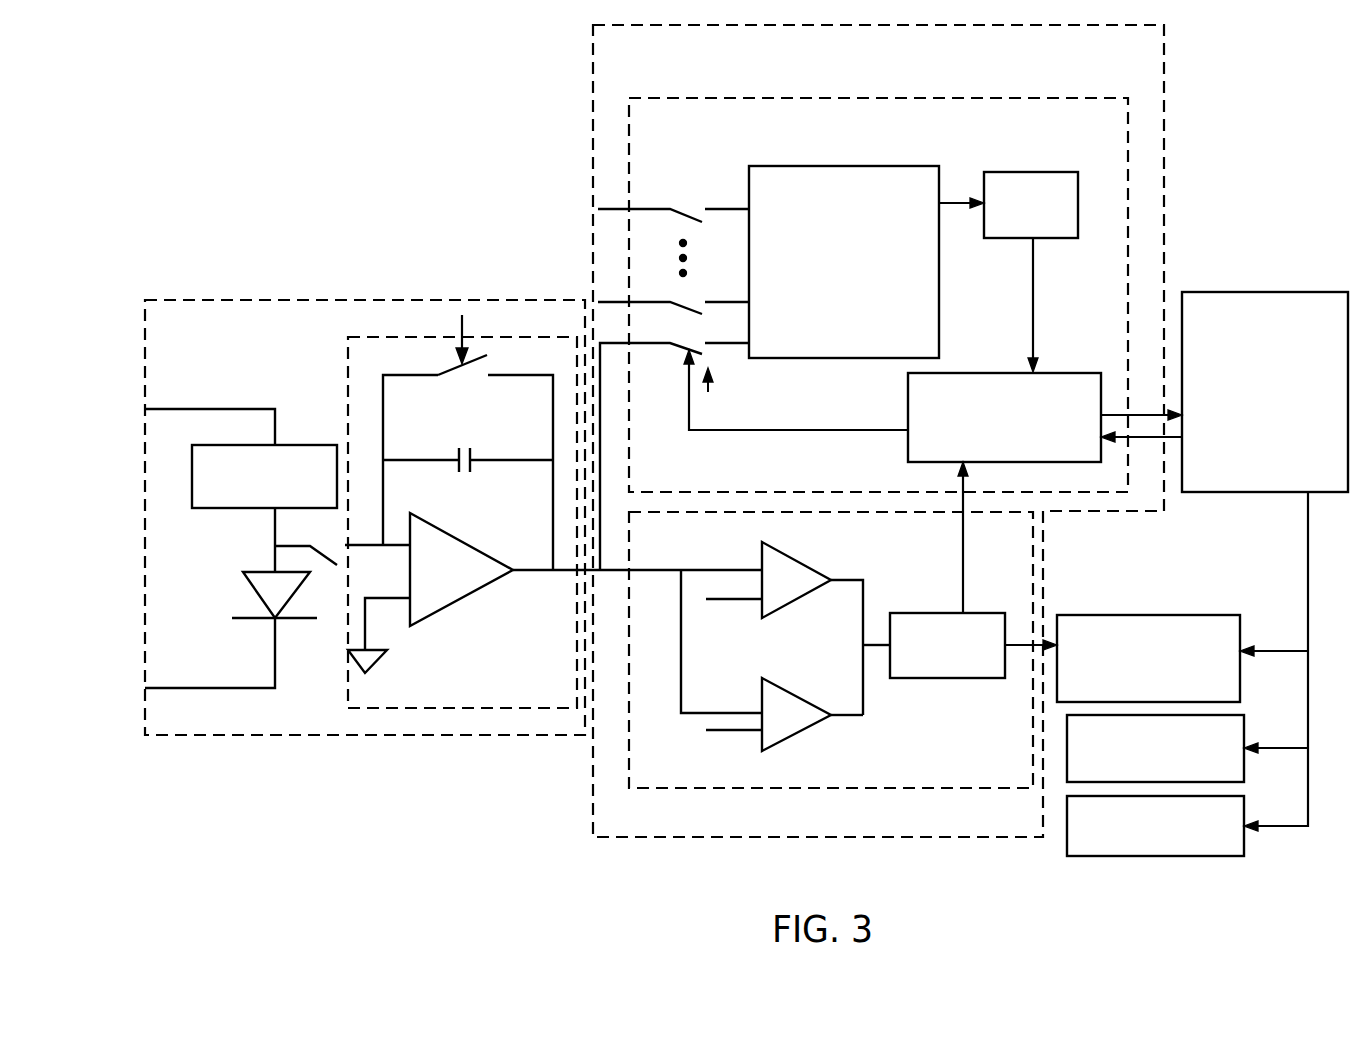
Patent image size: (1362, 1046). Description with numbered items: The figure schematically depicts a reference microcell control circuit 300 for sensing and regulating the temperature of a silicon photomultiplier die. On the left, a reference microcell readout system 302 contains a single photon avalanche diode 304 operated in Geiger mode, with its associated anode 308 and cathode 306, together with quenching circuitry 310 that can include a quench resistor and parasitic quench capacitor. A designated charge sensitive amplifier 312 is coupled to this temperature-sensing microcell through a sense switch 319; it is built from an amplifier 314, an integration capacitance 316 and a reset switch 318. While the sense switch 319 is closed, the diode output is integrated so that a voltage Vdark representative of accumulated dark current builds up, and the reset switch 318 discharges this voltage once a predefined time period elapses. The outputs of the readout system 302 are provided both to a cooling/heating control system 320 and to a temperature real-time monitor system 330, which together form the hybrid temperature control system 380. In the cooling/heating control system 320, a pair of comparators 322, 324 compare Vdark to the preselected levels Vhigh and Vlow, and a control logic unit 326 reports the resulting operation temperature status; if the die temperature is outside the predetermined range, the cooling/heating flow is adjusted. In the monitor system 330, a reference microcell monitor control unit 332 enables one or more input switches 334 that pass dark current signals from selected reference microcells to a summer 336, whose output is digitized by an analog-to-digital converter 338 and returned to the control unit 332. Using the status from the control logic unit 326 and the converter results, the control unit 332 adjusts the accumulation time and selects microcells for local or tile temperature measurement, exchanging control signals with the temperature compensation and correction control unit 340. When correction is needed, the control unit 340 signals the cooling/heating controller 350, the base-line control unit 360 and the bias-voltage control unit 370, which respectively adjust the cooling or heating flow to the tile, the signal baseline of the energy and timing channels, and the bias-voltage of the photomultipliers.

The reference microcell control circuit 300 is at (1196, 74).
The reference microcell readout system 302 is at (200, 300).
The single photon avalanche diode 304 is at (250, 563).
The cathode 306 is at (236, 685).
The anode 308 is at (155, 408).
The quenching circuitry 310 is at (192, 468).
The charge sensitive amplifier 312 is at (388, 710).
The amplifier 314 is at (476, 601).
The integration capacitance 316 is at (470, 474).
The reset switch 318 is at (440, 370).
The sense switch 319 is at (337, 565).
The cooling/heating control system 320 is at (930, 790).
The comparator 322 is at (810, 562).
The comparator 324 is at (801, 690).
The control logic unit 326 is at (976, 613).
The temperature real-time monitor system 330 is at (629, 170).
The reference microcell monitor control unit 332 is at (1071, 372).
The input switch 334 is at (686, 210).
The summer 336 is at (939, 280).
The analog-to-digital converter 338 is at (1032, 171).
The temperature compensation and correction control unit 340 is at (1267, 290).
The cooling/heating controller 350 is at (1150, 614).
The base-line control unit 360 is at (1244, 715).
The bias-voltage control unit 370 is at (1175, 856).
The hybrid temperature control system 380 is at (593, 98).